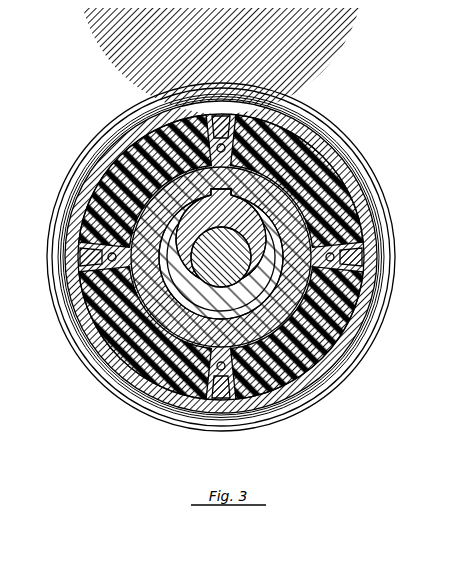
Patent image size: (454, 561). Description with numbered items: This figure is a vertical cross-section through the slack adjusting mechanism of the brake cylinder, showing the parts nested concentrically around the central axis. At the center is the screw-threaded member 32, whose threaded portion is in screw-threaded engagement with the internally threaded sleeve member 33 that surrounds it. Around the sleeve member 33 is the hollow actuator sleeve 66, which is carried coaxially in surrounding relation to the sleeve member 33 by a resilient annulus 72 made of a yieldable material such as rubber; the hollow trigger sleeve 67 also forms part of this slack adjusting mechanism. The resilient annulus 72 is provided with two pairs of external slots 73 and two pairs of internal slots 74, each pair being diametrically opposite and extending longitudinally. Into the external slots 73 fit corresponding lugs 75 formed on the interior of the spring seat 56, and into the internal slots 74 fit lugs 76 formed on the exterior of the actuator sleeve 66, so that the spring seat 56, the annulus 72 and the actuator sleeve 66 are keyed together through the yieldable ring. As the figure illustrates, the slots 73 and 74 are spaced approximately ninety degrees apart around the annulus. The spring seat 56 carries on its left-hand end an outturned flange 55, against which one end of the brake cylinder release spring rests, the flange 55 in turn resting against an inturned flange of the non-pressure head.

The screw-threaded member 32 is at (232, 222).
The internally threaded sleeve member 33 is at (353, 192).
The outturned flange 55 is at (373, 318).
The spring seat 56 is at (308, 362).
The hollow actuator sleeve 66 is at (160, 312).
The hollow trigger sleeve 67 is at (182, 330).
The resilient annulus 72 is at (300, 150).
The external slots 73 is at (223, 255).
The internal slots 74 is at (286, 118).
The lugs 75 is at (212, 112).
The lugs 76 is at (224, 112).